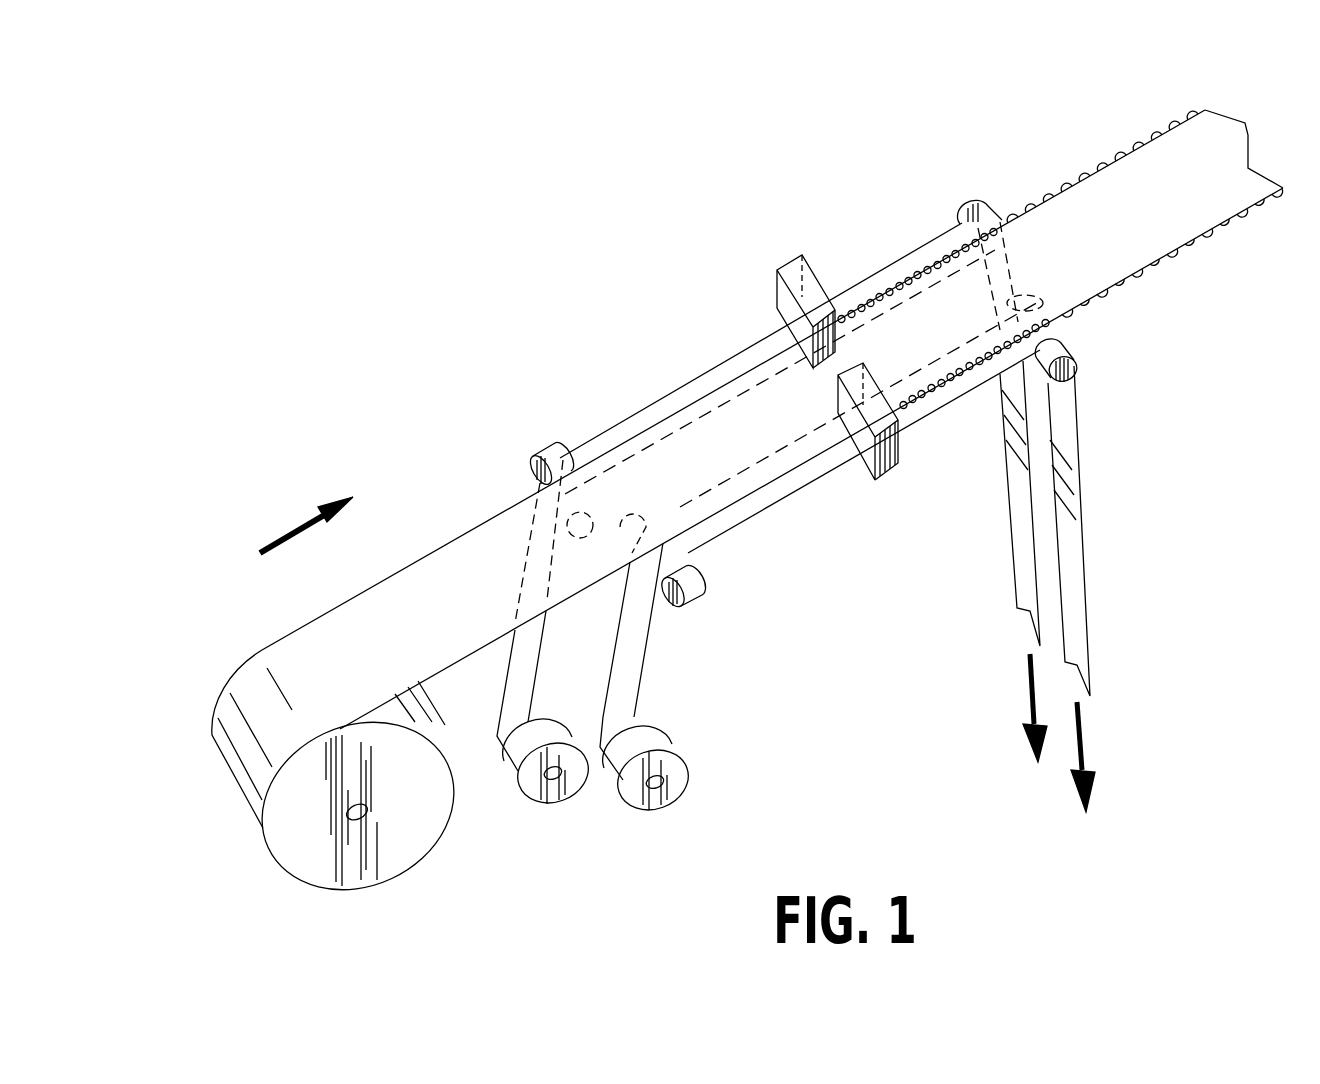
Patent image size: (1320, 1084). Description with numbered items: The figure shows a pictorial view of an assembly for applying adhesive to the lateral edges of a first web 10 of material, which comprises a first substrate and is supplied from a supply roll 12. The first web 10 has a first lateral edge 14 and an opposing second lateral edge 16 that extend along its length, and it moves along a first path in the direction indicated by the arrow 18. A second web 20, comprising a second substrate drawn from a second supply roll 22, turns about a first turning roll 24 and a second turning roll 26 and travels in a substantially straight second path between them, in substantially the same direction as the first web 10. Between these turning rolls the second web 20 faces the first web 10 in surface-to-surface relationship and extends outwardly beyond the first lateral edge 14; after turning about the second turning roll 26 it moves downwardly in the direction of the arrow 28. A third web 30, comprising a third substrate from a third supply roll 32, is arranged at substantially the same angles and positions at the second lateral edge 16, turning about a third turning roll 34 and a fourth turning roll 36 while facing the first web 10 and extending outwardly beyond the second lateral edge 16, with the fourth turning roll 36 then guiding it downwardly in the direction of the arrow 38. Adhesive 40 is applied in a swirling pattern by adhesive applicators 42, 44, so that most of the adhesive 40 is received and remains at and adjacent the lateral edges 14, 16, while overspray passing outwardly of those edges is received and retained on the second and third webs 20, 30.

The first web 10 is at (220, 674).
The supply roll 12 is at (447, 820).
The first lateral edge 14 is at (443, 545).
The second lateral edge 16 is at (437, 677).
The arrow 18 is at (287, 533).
The second web 20 is at (538, 668).
The second supply roll 22 is at (560, 798).
The first turning roll 24 is at (535, 452).
The second turning roll 26 is at (977, 197).
The arrow 28 is at (1030, 690).
The third web 30 is at (638, 683).
The third supply roll 32 is at (690, 766).
The third turning roll 34 is at (688, 603).
The fourth turning roll 36 is at (1080, 364).
The arrow 38 is at (1084, 748).
The adhesive 40 is at (912, 268).
The adhesive applicator 42 is at (793, 255).
The adhesive applicator 44 is at (900, 456).